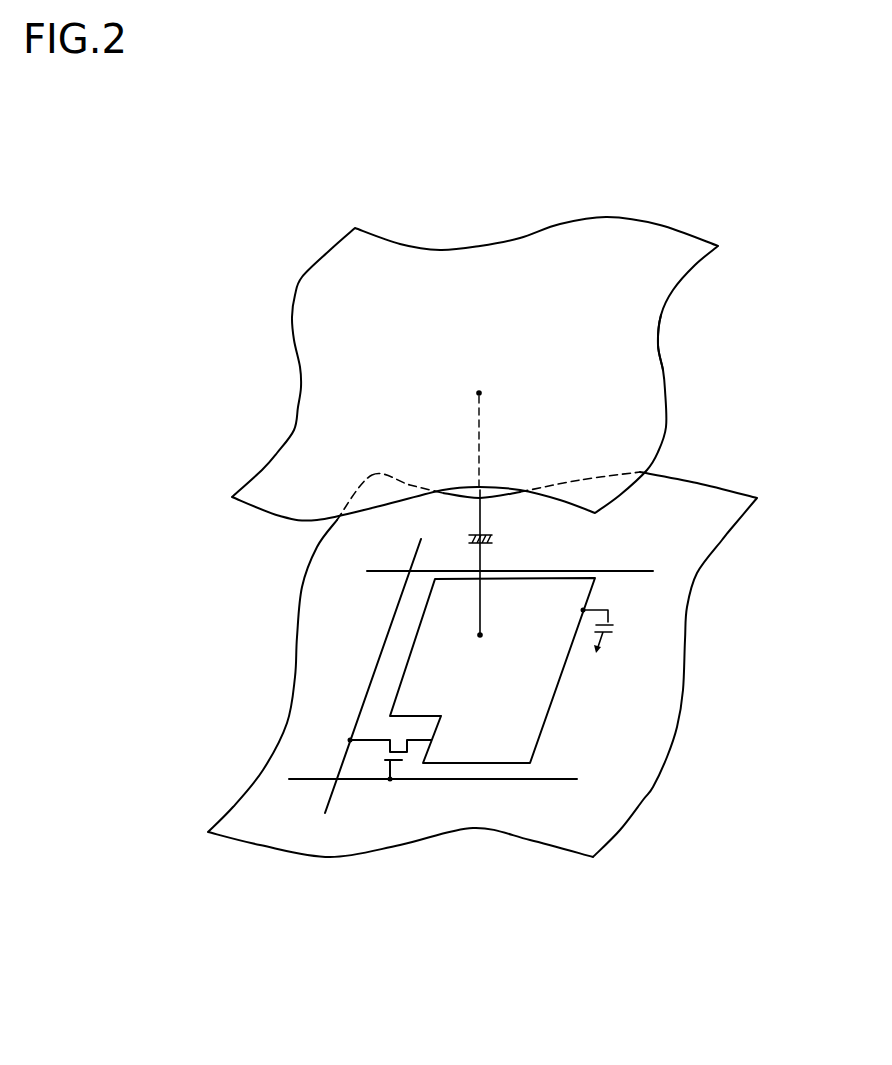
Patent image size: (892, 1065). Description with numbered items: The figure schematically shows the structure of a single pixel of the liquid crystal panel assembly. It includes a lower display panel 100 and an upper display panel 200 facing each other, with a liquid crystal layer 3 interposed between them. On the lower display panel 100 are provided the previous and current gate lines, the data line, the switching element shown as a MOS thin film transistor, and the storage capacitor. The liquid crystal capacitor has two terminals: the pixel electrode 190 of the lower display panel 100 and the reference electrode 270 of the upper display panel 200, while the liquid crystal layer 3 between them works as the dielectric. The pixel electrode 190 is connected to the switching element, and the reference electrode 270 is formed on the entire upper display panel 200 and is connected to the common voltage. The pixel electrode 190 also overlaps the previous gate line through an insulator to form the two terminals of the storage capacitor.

The lower display panel 100 is at (694, 643).
The upper display panel 200 is at (669, 392).
The reference electrode 270 is at (658, 345).
The pixel electrode 190 is at (547, 712).
The liquid crystal layer 3 is at (228, 583).